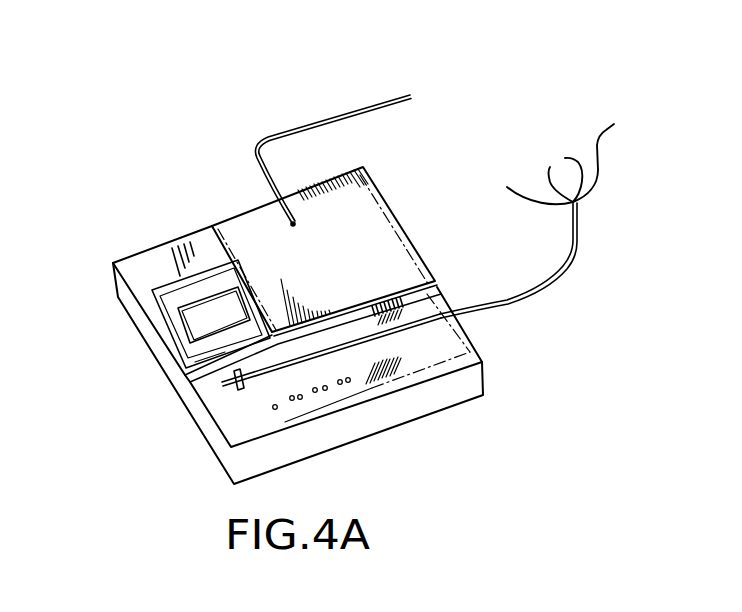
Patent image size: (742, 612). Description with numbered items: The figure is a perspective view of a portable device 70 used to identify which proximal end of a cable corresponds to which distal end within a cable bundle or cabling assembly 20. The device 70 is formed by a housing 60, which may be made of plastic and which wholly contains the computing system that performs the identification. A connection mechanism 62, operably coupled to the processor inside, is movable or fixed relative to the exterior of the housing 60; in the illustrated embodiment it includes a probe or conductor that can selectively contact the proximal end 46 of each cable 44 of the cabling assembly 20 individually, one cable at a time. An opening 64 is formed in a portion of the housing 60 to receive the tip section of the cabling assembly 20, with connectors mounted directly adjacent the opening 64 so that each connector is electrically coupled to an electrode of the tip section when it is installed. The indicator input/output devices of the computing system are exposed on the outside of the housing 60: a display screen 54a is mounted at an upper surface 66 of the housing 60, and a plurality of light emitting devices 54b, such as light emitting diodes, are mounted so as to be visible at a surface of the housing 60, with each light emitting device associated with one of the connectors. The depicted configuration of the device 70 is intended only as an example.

The cabling assembly 20 is at (564, 284).
The cable 44 is at (603, 151).
The proximal end 46 is at (602, 183).
The display screen 54a is at (207, 315).
The light emitting devices 54b is at (265, 407).
The housing 60 is at (420, 347).
The connection mechanism 62 is at (316, 123).
The opening 64 is at (348, 341).
The upper surface 66 is at (265, 271).
The portable device 70 is at (138, 224).